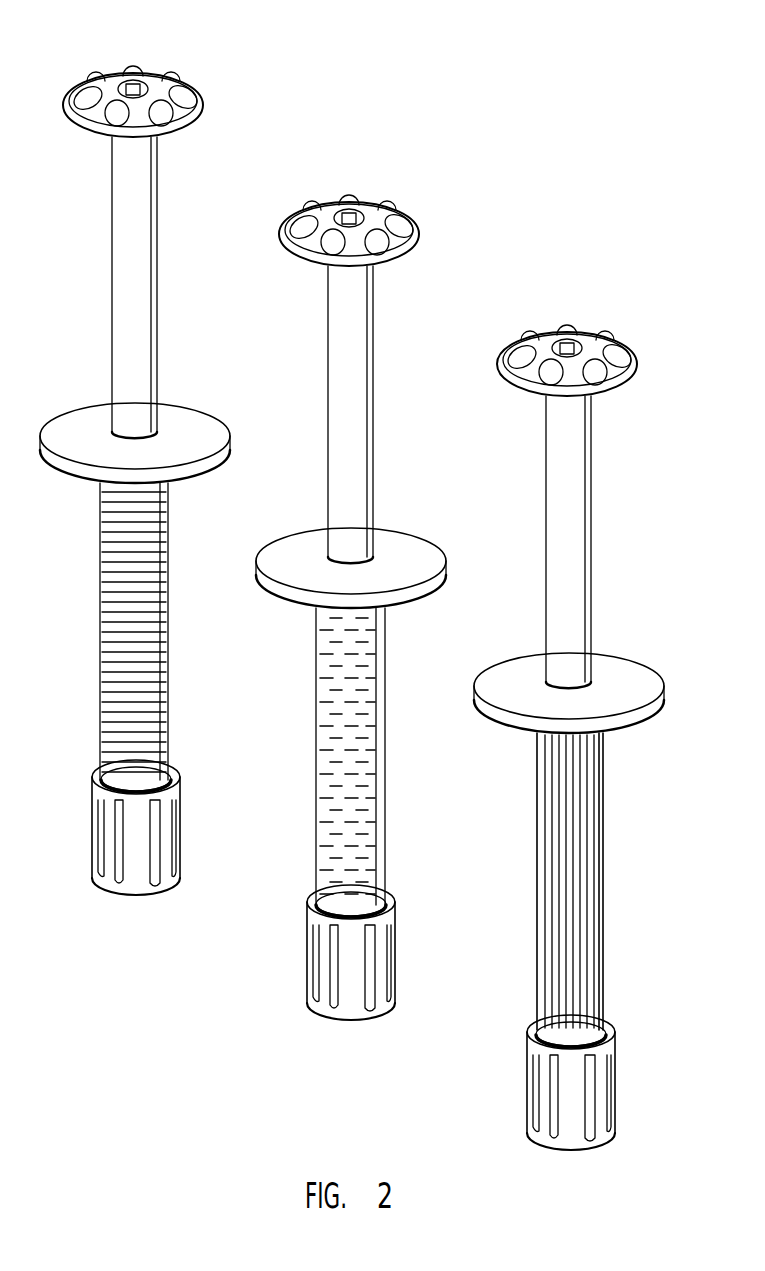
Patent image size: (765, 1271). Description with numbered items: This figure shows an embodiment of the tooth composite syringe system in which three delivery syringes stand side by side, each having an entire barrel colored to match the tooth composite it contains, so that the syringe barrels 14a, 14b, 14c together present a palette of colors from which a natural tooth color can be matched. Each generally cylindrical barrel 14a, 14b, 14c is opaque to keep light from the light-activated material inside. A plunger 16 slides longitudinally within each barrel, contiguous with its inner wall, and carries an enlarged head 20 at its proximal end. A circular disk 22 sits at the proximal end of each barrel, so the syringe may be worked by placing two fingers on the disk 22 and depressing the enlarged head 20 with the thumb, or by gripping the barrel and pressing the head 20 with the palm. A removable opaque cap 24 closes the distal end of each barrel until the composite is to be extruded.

The syringe barrel 14a is at (588, 870).
The syringe barrel 14b is at (368, 743).
The syringe barrel 14c is at (152, 622).
The plunger 16 is at (143, 292).
The enlarged head 20 is at (183, 85).
The circular disk 22 is at (190, 426).
The removable opaque cap 24 is at (167, 850).